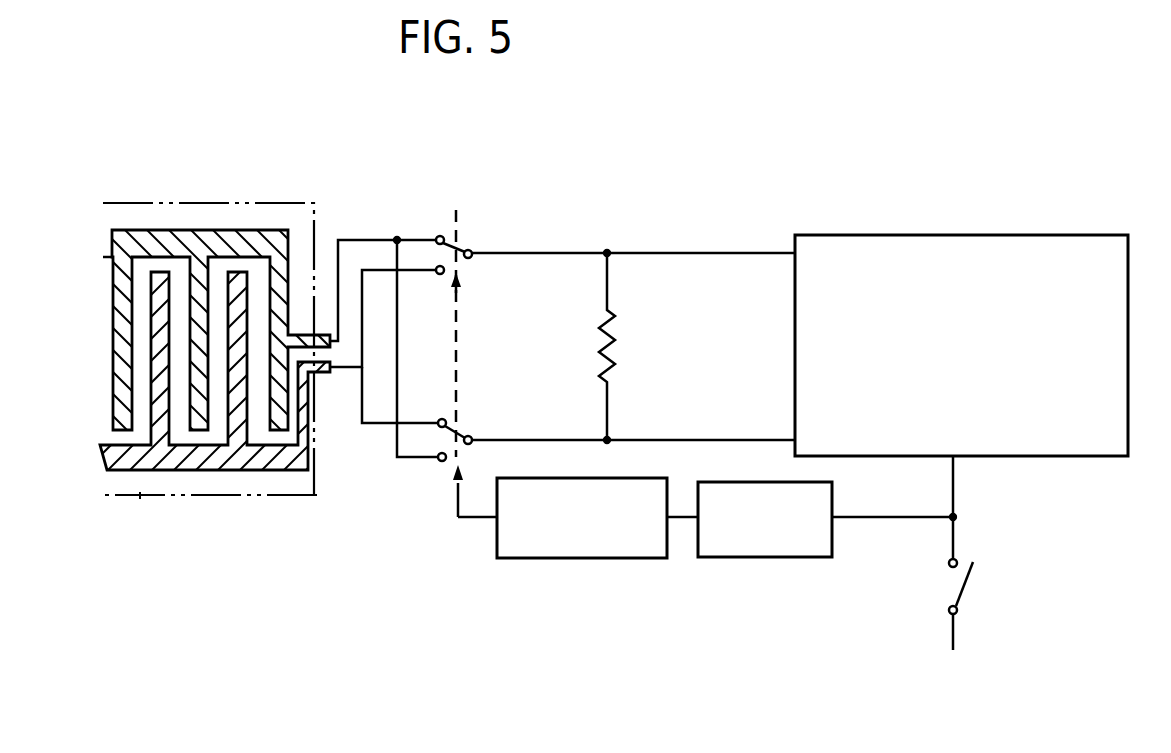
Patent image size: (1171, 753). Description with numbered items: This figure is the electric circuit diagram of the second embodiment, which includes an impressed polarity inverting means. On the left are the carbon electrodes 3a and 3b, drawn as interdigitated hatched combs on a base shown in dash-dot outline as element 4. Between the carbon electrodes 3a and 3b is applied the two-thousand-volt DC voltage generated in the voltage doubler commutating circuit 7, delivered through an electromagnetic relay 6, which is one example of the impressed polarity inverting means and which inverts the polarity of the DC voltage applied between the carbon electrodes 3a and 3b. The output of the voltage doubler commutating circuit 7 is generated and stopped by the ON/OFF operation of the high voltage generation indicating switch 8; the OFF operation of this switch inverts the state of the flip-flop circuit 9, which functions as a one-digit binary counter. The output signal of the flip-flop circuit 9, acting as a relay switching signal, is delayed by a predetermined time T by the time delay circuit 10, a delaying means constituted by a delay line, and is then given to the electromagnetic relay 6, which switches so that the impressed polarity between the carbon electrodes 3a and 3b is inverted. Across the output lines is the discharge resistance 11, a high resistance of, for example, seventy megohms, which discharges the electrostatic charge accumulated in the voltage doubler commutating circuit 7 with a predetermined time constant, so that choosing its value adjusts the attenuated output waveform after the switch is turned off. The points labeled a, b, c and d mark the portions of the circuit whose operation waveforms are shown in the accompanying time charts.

The carbon electrode 3a is at (235, 240).
The carbon electrode 3b is at (247, 462).
The substrate 4 is at (201, 497).
The electromagnetic relay 6 is at (470, 232).
The voltage doubler commutating circuit 7 is at (953, 245).
The high voltage generation indicating switch 8 is at (949, 593).
The flip-flop circuit 9 is at (732, 558).
The time delay circuit 10 is at (535, 560).
The discharge resistance 11 is at (617, 340).
The portion a of the electric circuit a is at (958, 535).
The portion b of the electric circuit b is at (703, 255).
The portion c of the electric circuit c is at (472, 518).
The portion d of the electric circuit d is at (362, 237).